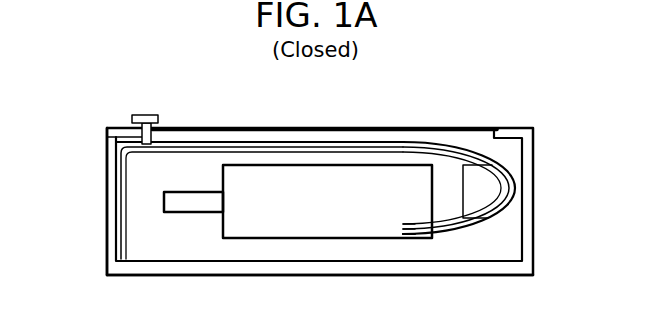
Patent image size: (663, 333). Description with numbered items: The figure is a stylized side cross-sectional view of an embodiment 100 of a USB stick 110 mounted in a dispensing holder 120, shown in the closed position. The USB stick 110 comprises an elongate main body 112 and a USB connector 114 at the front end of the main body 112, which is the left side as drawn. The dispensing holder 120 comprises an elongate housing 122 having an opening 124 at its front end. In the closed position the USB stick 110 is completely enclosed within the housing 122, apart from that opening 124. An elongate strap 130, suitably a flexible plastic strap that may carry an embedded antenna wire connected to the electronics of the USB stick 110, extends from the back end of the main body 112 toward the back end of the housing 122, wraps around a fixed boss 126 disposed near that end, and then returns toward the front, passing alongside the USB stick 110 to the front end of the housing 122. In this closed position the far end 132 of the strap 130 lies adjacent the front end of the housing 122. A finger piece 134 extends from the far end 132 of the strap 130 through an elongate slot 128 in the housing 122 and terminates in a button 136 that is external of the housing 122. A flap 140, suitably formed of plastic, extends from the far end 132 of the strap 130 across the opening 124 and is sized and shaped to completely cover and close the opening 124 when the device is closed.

The embodiment 100 is at (409, 76).
The USB stick 110 is at (218, 244).
The main body 112 is at (322, 208).
The USB connector 114 is at (200, 212).
The dispensing holder 120 is at (459, 108).
The housing 122 is at (335, 277).
The opening 124 is at (110, 177).
The fixed boss 126 is at (500, 166).
The elongate slot 128 is at (258, 128).
The strap 130 is at (470, 231).
The far end 132 is at (159, 134).
The finger piece 134 is at (106, 133).
The button 136 is at (141, 116).
The flap 140 is at (118, 207).